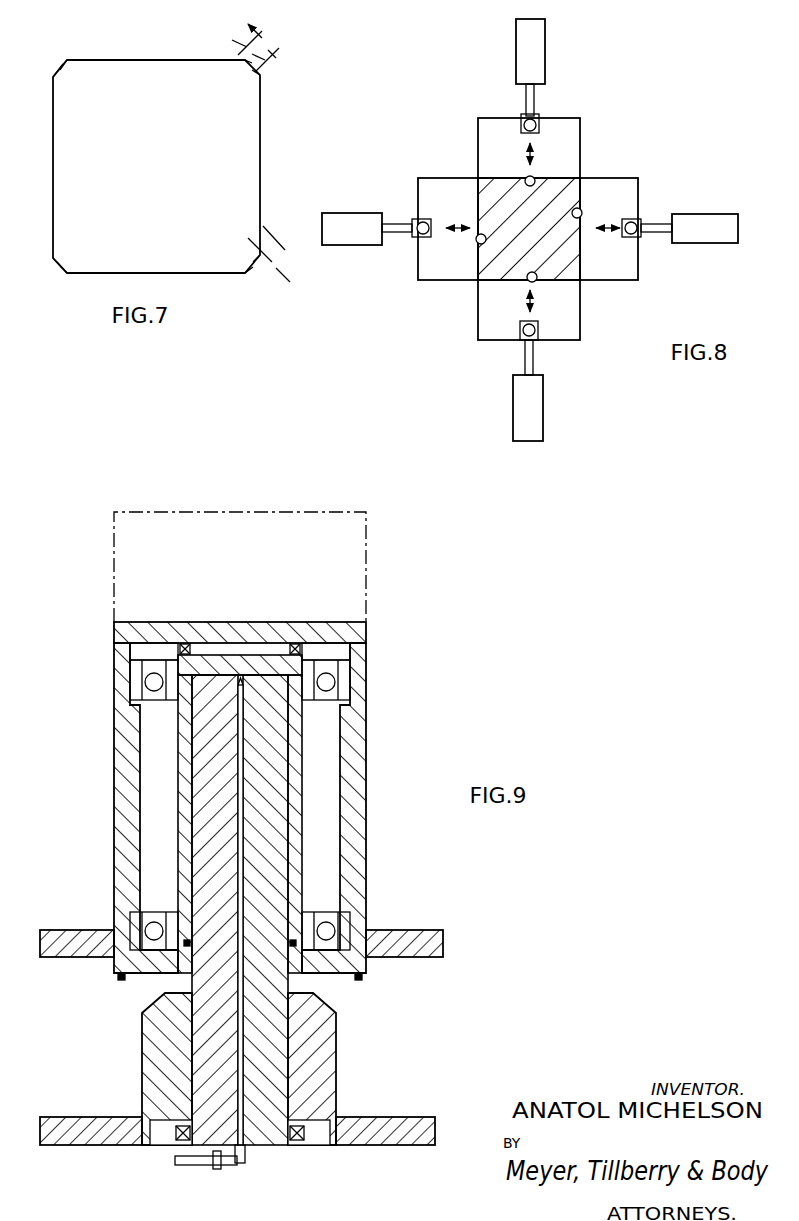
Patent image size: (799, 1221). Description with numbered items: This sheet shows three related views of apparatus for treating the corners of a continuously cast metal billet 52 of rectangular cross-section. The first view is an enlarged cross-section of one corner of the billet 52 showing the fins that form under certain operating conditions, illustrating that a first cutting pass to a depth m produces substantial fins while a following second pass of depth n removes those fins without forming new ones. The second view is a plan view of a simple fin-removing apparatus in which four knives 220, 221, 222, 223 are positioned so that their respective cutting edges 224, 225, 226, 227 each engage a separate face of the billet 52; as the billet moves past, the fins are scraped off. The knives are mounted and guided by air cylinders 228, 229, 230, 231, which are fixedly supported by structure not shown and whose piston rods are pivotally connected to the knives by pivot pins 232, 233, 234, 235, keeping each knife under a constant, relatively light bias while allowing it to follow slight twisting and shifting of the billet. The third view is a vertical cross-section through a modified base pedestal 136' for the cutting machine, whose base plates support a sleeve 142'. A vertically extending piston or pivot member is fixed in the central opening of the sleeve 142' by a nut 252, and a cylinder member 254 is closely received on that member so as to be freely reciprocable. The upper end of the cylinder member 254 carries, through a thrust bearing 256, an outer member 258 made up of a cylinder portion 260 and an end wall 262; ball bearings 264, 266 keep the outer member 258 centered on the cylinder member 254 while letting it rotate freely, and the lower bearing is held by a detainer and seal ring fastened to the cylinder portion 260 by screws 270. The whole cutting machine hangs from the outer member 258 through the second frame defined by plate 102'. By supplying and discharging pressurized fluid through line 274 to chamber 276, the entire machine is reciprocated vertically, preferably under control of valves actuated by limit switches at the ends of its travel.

In FIG. 7, the billet 52 is at (264, 117).
In FIG. 8, the billet 52 is at (514, 278).
In FIG. 8, the knife 220 is at (610, 280).
In FIG. 8, the knife 221 is at (573, 131).
In FIG. 8, the knife 222 is at (443, 183).
In FIG. 8, the knife 223 is at (480, 324).
In FIG. 8, the cutting edge 224 is at (580, 213).
In FIG. 8, the cutting edge 225 is at (524, 181).
In FIG. 8, the cutting edge 226 is at (477, 239).
In FIG. 8, the cutting edge 227 is at (538, 280).
In FIG. 8, the air cylinder 228 is at (706, 217).
In FIG. 8, the air cylinder 229 is at (546, 52).
In FIG. 8, the air cylinder 230 is at (359, 216).
In FIG. 8, the air cylinder 231 is at (545, 402).
In FIG. 8, the pivot pin 232 is at (636, 240).
In FIG. 8, the pivot pin 233 is at (538, 121).
In FIG. 8, the pivot pin 234 is at (416, 240).
In FIG. 8, the pivot pin 235 is at (540, 334).
In FIG. 9, the plate 102' is at (256, 925).
In FIG. 9, the base pedestal 136' is at (237, 1107).
In FIG. 9, the sleeve 142' is at (268, 1069).
In FIG. 9, the nut 252 is at (295, 1142).
In FIG. 9, the cylinder member 254 is at (302, 780).
In FIG. 9, the thrust bearing 256 is at (186, 648).
In FIG. 9, the outer member 258 is at (378, 680).
In FIG. 9, the cylinder portion 260 is at (367, 715).
In FIG. 9, the end wall 262 is at (366, 624).
In FIG. 9, the ball bearing 264 is at (148, 928).
In FIG. 9, the ball bearing 266 is at (150, 682).
In FIG. 9, the screws 270 is at (119, 977).
In FIG. 9, the line 274 is at (240, 771).
In FIG. 9, the chamber 276 is at (262, 672).